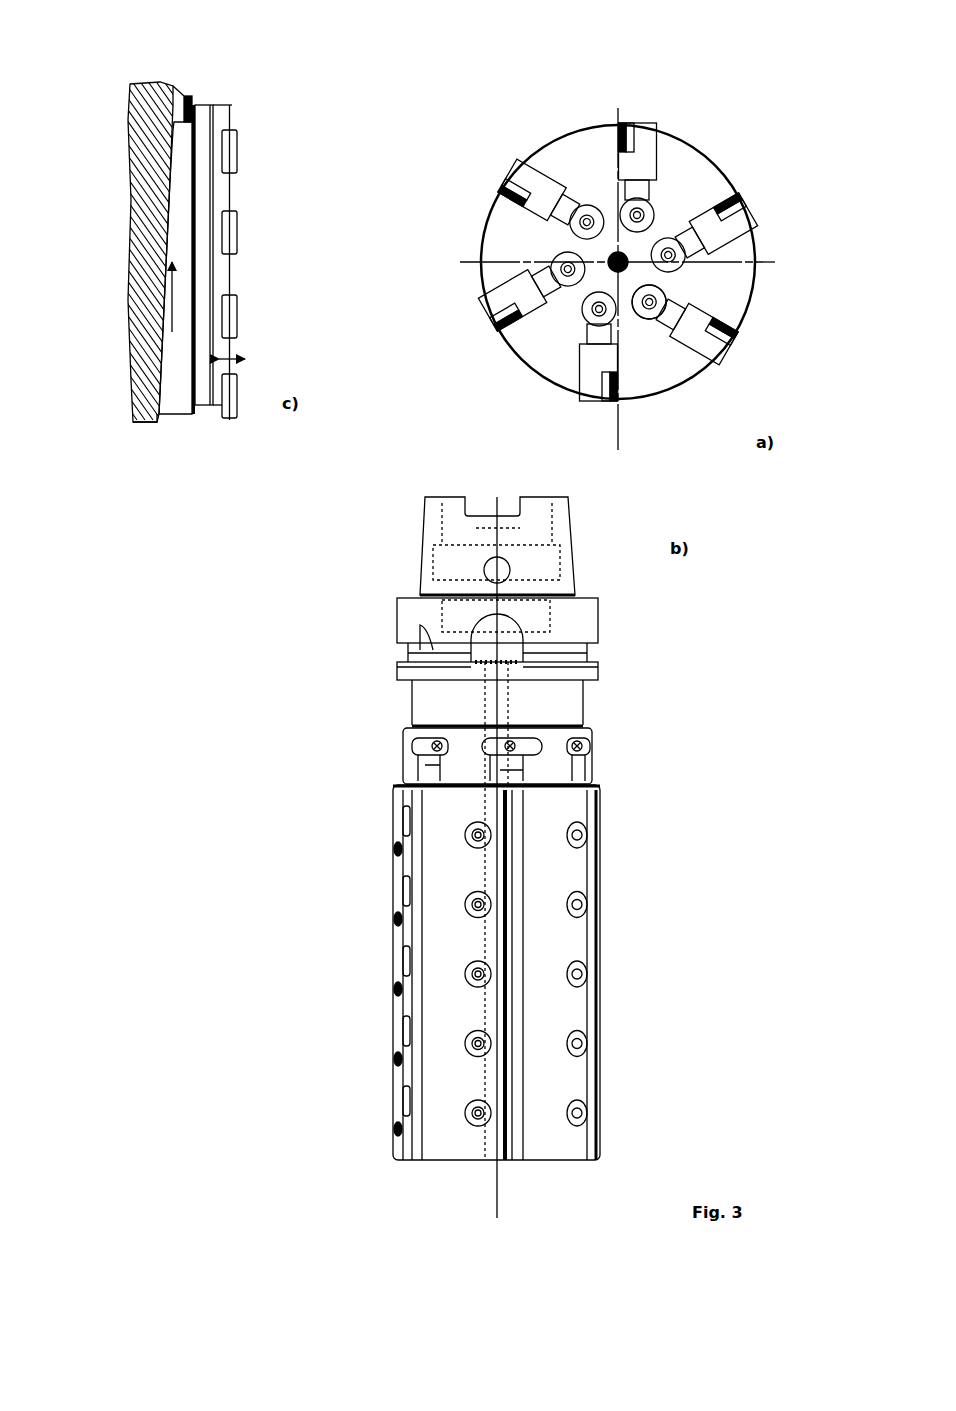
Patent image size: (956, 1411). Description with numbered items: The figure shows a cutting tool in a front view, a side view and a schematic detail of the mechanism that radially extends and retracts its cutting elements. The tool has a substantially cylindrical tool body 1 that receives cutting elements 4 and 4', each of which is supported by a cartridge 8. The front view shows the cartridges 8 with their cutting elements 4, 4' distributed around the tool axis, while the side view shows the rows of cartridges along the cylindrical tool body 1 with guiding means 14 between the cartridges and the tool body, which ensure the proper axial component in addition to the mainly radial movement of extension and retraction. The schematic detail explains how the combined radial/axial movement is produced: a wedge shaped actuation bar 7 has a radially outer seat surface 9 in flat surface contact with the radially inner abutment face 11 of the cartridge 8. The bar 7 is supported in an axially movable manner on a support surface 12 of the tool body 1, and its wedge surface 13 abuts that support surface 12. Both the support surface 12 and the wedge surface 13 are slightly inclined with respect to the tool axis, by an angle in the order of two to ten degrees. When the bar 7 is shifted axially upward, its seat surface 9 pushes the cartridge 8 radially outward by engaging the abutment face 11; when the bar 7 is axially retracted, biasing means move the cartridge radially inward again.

In FIG. 3c, the tool body 1 is at (148, 383).
In FIG. 3a, the cutting element 4 is at (644, 229).
In FIG. 3a, the cutting element 4' is at (659, 323).
In FIG. 3c, the wedge shaped actuation bar 7 is at (168, 414).
In FIG. 3a, the wedge shaped actuation bar 7 is at (667, 292).
In FIG. 3c, the cartridge 8 is at (221, 120).
In FIG. 3a, the cartridge 8 is at (647, 148).
In FIG. 3c, the seat surface 9 is at (194, 409).
In FIG. 3c, the abutment face 11 is at (187, 98).
In FIG. 3c, the support surface 12 is at (181, 88).
In FIG. 3c, the wedge surface 13 is at (148, 408).
In FIG. 3b, the guiding means 14 is at (600, 833).